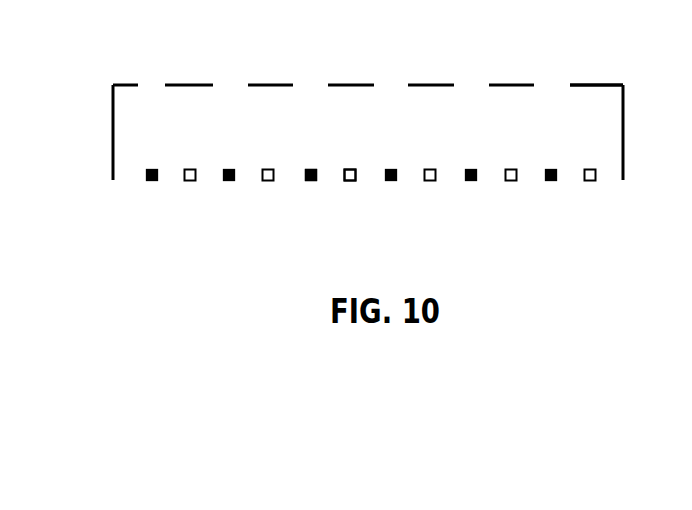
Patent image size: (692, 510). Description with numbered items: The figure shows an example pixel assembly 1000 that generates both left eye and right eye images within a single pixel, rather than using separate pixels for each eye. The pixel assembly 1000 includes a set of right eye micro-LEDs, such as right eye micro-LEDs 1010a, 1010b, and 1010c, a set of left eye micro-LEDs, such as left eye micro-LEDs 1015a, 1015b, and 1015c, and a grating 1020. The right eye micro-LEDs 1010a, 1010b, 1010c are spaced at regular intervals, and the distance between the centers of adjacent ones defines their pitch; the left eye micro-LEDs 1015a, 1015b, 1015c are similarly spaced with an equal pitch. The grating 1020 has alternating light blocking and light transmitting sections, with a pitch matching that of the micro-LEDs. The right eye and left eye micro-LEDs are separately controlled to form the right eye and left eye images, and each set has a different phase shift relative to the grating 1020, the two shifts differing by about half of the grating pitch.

The pixel assembly 1000 is at (185, 42).
The grating 1020 is at (597, 84).
The right eye micro-LED 1010a is at (155, 184).
The right eye micro-LED 1010b is at (232, 184).
The right eye micro-LED 1010c is at (314, 184).
The left eye micro-LED 1015a is at (190, 184).
The left eye micro-LED 1015b is at (268, 184).
The left eye micro-LED 1015c is at (350, 184).